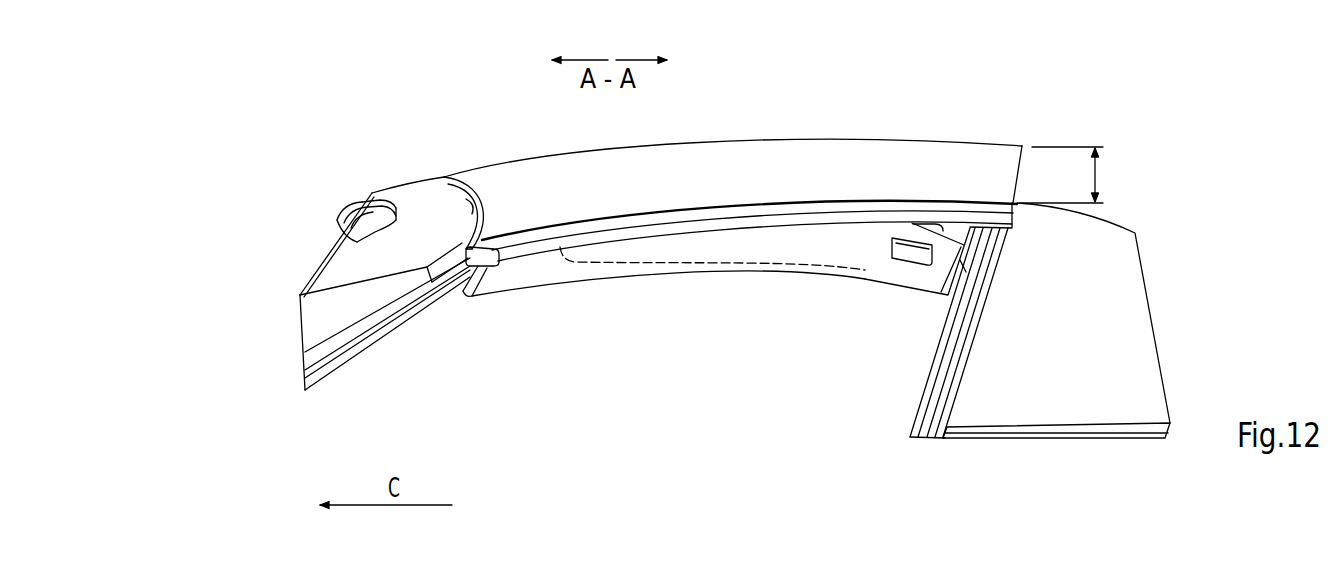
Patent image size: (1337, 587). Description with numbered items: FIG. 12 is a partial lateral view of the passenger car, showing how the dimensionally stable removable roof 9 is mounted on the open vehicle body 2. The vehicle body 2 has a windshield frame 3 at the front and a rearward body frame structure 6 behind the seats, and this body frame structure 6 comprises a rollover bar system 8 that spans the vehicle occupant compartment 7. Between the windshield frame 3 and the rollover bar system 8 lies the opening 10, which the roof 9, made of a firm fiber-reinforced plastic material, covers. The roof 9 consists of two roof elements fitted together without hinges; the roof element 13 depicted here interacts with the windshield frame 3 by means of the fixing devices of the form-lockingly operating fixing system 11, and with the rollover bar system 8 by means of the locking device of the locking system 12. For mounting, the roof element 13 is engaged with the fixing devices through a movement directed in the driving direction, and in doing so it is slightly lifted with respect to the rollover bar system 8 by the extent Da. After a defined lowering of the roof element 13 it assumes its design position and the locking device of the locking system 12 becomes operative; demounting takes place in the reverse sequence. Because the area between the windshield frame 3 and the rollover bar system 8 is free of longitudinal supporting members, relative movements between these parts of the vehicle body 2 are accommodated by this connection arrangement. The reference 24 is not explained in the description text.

The vehicle body 2 is at (1148, 263).
The windshield frame 3 is at (322, 272).
The rearward body frame structure 6 is at (927, 448).
The vehicle occupant compartment 7 is at (668, 296).
The rollover bar system 8 is at (1161, 348).
The removable roof 9 is at (513, 157).
The opening 10 is at (773, 197).
The fixing system 11 is at (492, 298).
The locking system 12 is at (933, 303).
The roof element 13 is at (913, 138).
The cover edge 24 is at (401, 183).
The lifting extent Da is at (1079, 175).